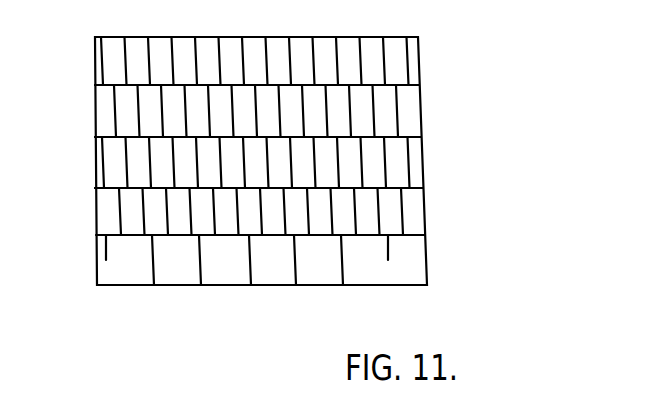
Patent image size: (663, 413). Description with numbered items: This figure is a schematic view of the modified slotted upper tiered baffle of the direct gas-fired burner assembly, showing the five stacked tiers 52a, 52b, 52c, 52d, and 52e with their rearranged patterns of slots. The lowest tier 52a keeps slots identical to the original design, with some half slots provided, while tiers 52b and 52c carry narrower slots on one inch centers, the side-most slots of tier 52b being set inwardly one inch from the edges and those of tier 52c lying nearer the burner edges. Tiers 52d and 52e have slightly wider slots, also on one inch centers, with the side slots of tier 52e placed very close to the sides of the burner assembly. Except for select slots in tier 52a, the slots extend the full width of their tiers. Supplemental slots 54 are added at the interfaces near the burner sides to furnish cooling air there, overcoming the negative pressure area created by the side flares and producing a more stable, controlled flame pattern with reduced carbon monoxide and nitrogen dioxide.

The tier a of upper tiered baffle 52a is at (426, 245).
The tier b of upper tiered baffle 52b is at (425, 210).
The tier c of upper tiered baffle 52c is at (424, 158).
The tier d of upper tiered baffle 52d is at (421, 112).
The tier e of upper tiered baffle 52e is at (420, 62).
The supplemental slots 54 is at (420, 80).